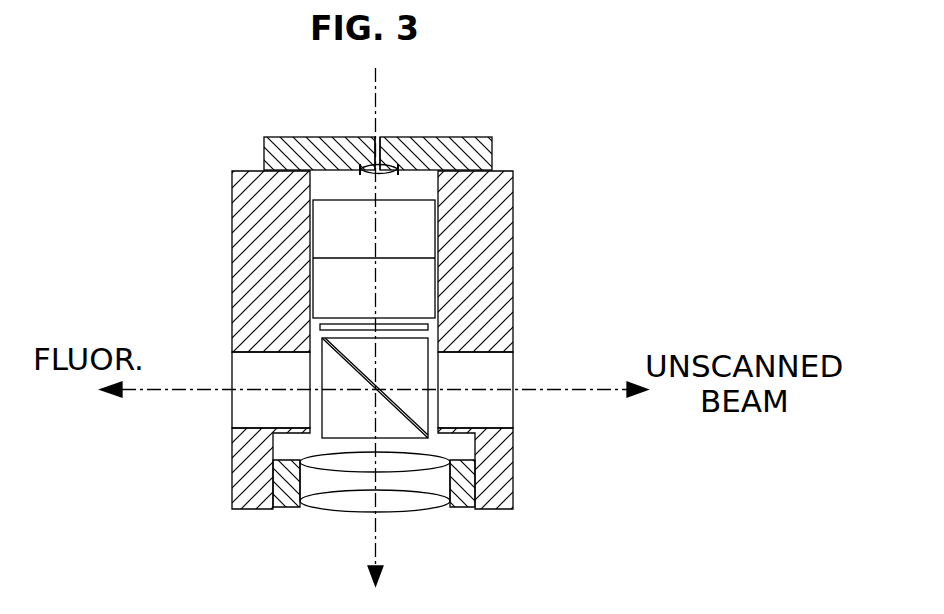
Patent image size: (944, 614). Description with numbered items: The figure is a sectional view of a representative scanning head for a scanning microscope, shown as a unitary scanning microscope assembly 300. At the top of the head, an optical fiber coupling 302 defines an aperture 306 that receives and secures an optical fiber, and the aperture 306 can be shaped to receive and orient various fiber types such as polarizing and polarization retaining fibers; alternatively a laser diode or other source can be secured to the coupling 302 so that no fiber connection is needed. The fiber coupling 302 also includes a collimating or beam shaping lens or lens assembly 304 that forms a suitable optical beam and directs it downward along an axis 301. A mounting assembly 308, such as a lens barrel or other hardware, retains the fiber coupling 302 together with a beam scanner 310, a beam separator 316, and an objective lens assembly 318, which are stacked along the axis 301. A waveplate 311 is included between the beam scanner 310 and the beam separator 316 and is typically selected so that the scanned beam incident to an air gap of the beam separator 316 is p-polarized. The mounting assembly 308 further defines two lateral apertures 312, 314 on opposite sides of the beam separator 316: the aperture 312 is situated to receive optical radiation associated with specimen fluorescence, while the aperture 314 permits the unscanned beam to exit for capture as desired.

The unitary scanning microscope assembly 300 is at (652, 132).
The axis 301 is at (378, 104).
The optical fiber coupling 302 is at (465, 137).
The collimating or beam shaping lens or lens assembly 304 is at (358, 172).
The aperture 306 is at (377, 137).
The mounting assembly 308 is at (513, 237).
The beam scanner 310 is at (348, 303).
The waveplate 311 is at (428, 327).
The aperture 312 is at (232, 413).
The aperture 314 is at (507, 362).
The beam separator 316 is at (428, 377).
The objective lens assembly 318 is at (410, 513).